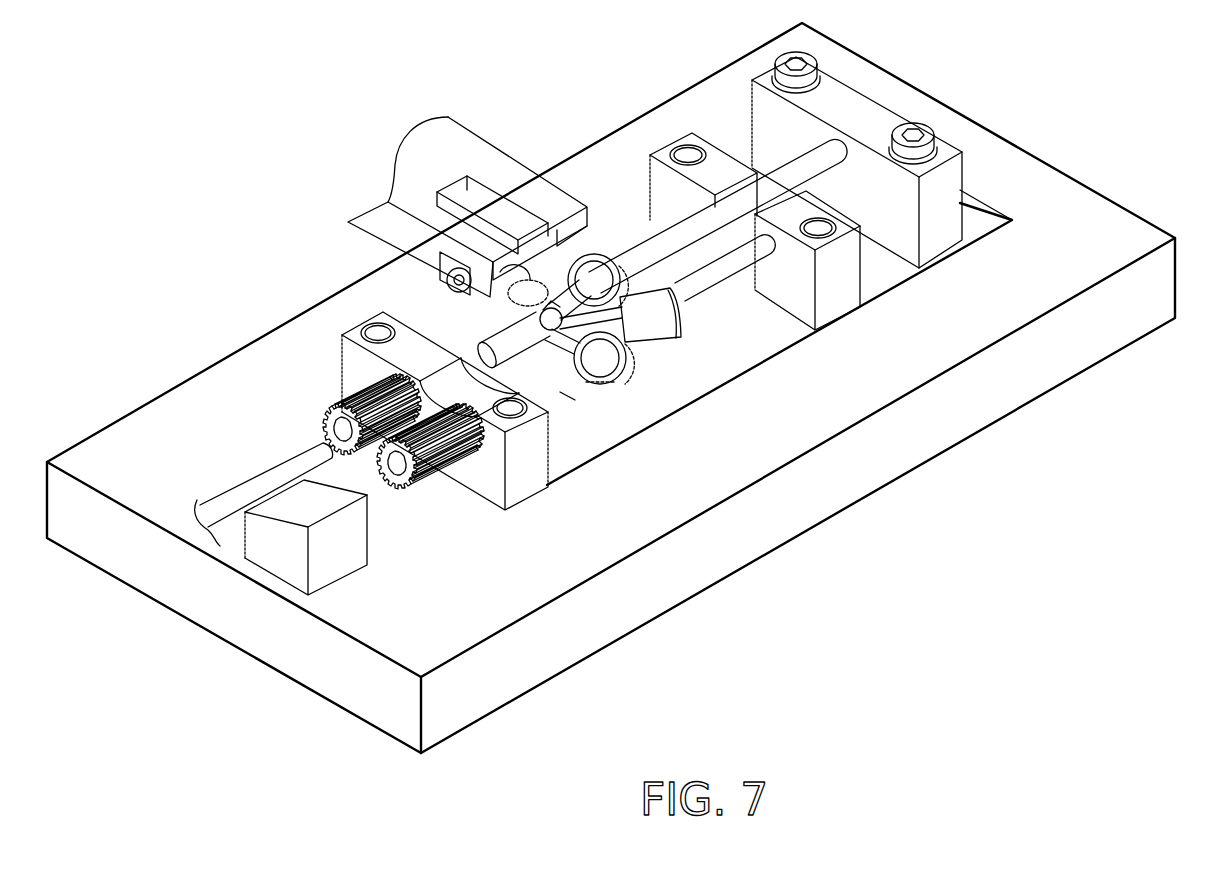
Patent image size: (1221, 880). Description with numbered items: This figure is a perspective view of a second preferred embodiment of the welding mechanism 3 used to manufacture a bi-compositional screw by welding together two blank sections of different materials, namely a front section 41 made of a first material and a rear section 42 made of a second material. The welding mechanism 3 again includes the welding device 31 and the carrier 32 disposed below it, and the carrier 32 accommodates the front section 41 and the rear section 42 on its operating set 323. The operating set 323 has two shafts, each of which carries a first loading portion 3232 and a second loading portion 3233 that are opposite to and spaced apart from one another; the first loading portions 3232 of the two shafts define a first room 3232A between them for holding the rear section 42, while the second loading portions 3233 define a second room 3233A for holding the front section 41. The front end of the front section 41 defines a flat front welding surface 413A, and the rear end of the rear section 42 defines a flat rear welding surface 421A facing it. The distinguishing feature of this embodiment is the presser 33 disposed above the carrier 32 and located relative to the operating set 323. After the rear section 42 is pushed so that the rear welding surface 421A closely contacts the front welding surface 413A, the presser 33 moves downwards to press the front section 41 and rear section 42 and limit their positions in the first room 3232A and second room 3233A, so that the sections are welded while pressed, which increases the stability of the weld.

The welding mechanism 3 is at (175, 170).
The welding device 31 is at (662, 338).
The carrier 32 is at (1050, 358).
The presser 33 is at (440, 147).
The operating set 323 is at (443, 330).
The first loading portion 3232 is at (567, 393).
The first room 3232A is at (587, 377).
The second loading portion 3233 is at (622, 370).
The second room 3233A is at (613, 368).
The front section 41 is at (583, 266).
The front welding surface 413A is at (555, 305).
The rear section 42 is at (490, 333).
The rear welding surface 421A is at (482, 267).